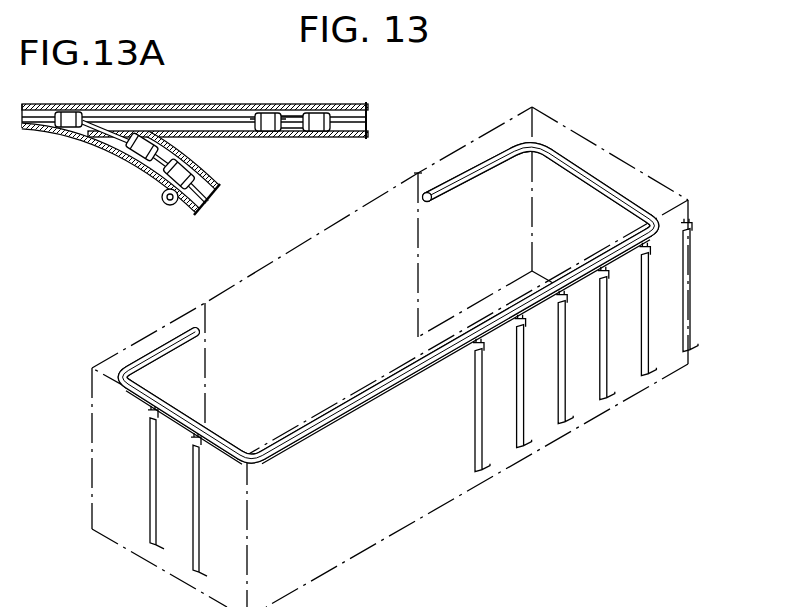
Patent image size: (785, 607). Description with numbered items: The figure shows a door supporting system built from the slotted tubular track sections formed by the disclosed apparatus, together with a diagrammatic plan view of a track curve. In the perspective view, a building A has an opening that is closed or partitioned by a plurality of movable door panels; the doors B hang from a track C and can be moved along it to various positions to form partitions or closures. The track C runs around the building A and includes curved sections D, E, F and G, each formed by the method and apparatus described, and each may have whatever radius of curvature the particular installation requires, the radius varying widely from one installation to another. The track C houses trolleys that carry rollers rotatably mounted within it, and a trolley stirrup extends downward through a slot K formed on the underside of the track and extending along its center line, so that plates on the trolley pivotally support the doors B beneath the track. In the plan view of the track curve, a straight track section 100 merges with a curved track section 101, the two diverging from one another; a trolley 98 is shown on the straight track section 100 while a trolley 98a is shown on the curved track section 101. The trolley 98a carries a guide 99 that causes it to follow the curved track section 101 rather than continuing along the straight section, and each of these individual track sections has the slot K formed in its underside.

In FIG. 13, the building A is at (438, 513).
In FIG. 13, the doors B is at (626, 383).
In FIG. 13, the track C is at (590, 166).
In FIG. 13, the curved track section D is at (530, 138).
In FIG. 13, the curved track section E is at (667, 224).
In FIG. 13, the curved track section F is at (254, 455).
In FIG. 13, the curved track section G is at (125, 385).
In FIG. 13A, the slot K is at (141, 118).
In FIG. 13A, the straight track section 100 is at (240, 91).
In FIG. 13A, the curved track section 101 is at (216, 186).
In FIG. 13A, the trolley 98 is at (272, 114).
In FIG. 13A, the trolley 98a is at (142, 150).
In FIG. 13A, the guide 99 is at (166, 205).